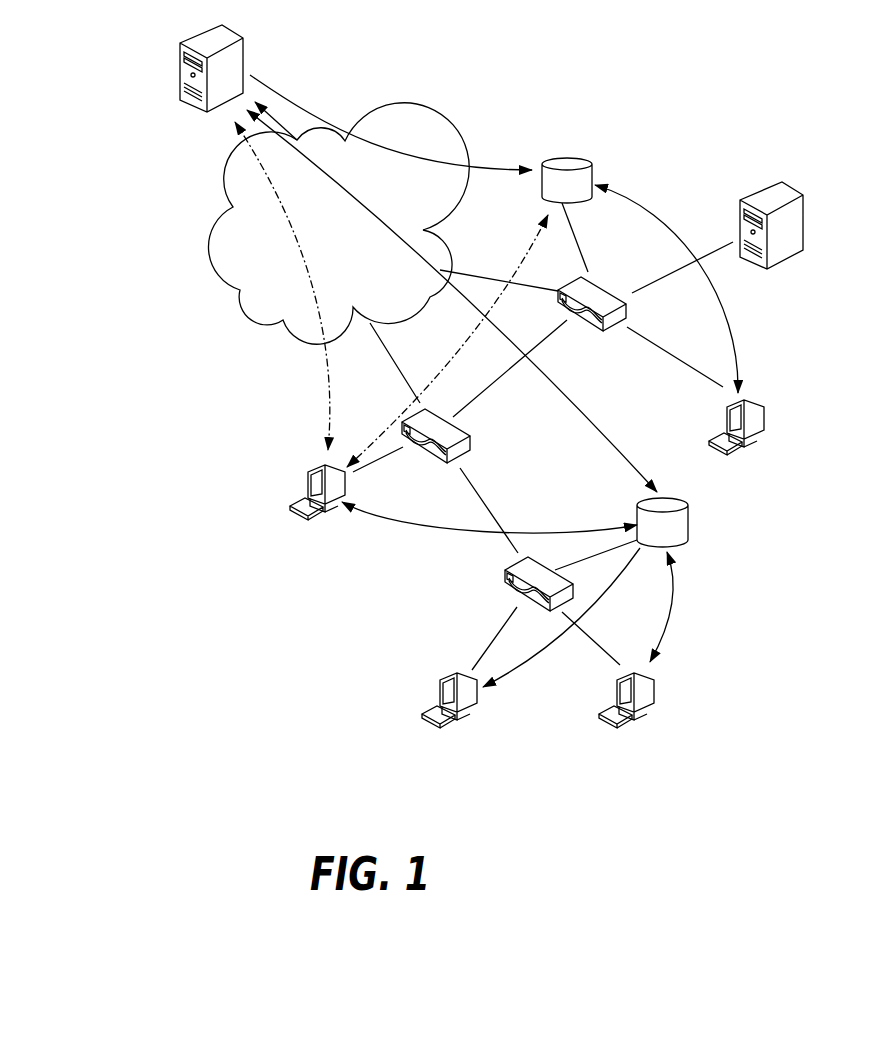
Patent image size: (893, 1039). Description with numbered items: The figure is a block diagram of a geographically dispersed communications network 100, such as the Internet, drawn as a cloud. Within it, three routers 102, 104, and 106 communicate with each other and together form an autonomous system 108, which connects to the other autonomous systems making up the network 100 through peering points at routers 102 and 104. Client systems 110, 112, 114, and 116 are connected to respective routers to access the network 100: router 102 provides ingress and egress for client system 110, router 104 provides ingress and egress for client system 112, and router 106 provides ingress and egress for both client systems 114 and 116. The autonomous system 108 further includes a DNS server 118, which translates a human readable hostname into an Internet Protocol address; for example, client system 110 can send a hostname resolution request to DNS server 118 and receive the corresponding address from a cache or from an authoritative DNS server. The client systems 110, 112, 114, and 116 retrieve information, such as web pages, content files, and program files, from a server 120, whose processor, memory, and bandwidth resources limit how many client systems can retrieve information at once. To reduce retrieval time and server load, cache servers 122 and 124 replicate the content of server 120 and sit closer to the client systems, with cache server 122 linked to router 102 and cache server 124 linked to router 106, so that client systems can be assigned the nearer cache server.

The network 100 is at (192, 260).
The router 102 is at (600, 290).
The router 104 is at (445, 466).
The router 106 is at (502, 578).
The autonomous system 108 is at (635, 127).
The client system 110 is at (728, 399).
The client system 112 is at (312, 462).
The client system 114 is at (447, 673).
The client system 116 is at (620, 673).
The DNS server 118 is at (757, 205).
The server 120 is at (197, 48).
The cache server 122 is at (541, 200).
The cache server 124 is at (690, 523).